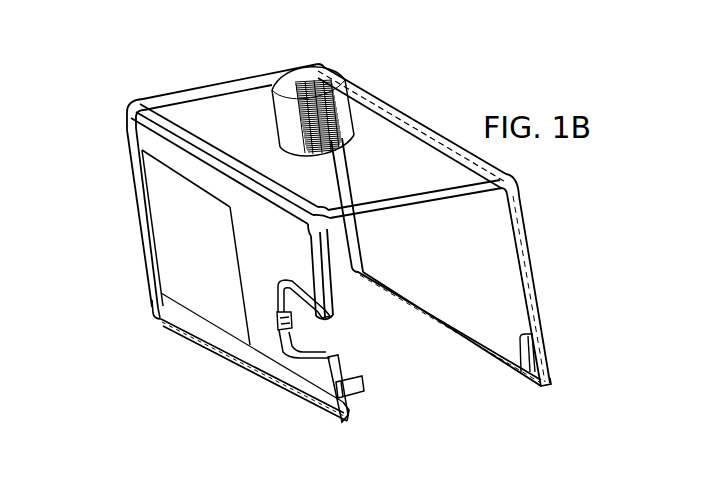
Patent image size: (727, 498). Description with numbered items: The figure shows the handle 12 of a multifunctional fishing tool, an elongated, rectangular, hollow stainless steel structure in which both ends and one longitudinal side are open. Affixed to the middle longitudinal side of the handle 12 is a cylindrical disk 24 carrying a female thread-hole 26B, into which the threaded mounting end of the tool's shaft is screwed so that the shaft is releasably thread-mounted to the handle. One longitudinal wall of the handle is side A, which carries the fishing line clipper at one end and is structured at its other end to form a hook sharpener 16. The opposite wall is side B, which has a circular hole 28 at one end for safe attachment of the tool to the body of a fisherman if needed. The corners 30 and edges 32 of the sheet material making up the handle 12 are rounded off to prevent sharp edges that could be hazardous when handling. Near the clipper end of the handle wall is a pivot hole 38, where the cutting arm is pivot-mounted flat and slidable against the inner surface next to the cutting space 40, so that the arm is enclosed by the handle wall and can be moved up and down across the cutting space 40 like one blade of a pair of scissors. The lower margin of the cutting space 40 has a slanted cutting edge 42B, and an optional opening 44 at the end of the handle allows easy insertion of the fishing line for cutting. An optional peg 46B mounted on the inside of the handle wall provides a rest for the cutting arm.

The handle 12 is at (100, 68).
The cylindrical disk 24 is at (287, 114).
The female thread-hole 26B is at (292, 94).
The hook sharpener 16 is at (168, 228).
The side B is at (468, 255).
The side A is at (262, 268).
The corners 30 is at (157, 308).
The edges 32 is at (238, 331).
The pivot hole 38 is at (277, 326).
The cutting space 40 is at (302, 322).
The cutting edge 42B is at (310, 362).
The opening 44 is at (323, 338).
The peg 46B is at (352, 390).
The circular hole 28 is at (524, 368).